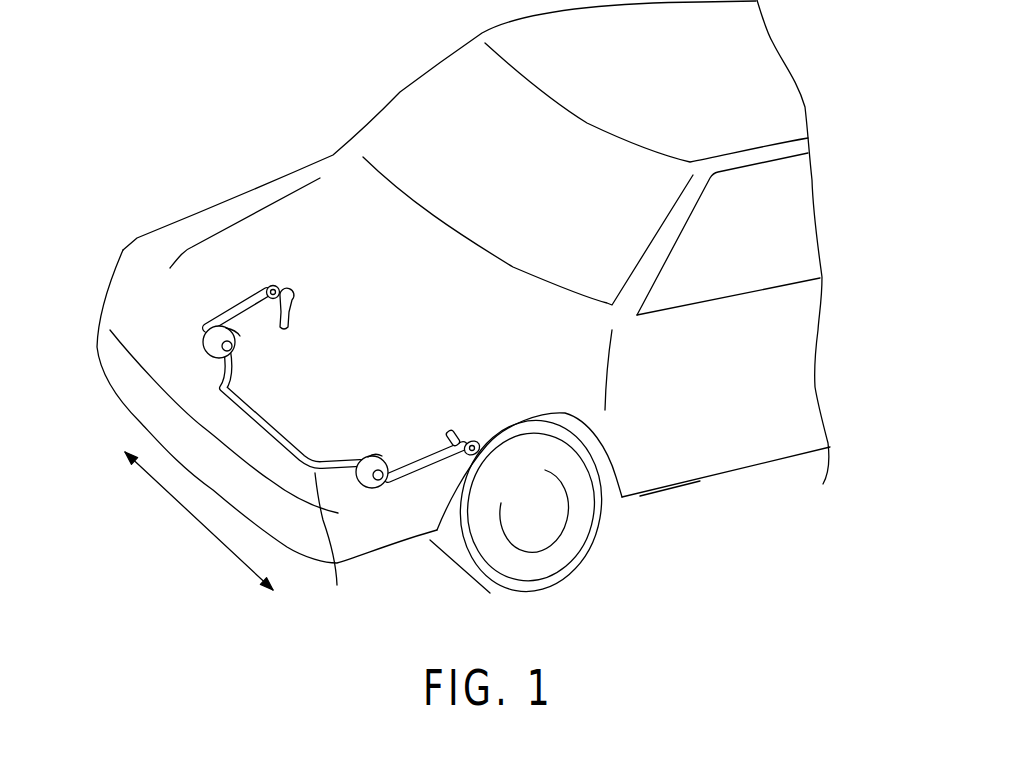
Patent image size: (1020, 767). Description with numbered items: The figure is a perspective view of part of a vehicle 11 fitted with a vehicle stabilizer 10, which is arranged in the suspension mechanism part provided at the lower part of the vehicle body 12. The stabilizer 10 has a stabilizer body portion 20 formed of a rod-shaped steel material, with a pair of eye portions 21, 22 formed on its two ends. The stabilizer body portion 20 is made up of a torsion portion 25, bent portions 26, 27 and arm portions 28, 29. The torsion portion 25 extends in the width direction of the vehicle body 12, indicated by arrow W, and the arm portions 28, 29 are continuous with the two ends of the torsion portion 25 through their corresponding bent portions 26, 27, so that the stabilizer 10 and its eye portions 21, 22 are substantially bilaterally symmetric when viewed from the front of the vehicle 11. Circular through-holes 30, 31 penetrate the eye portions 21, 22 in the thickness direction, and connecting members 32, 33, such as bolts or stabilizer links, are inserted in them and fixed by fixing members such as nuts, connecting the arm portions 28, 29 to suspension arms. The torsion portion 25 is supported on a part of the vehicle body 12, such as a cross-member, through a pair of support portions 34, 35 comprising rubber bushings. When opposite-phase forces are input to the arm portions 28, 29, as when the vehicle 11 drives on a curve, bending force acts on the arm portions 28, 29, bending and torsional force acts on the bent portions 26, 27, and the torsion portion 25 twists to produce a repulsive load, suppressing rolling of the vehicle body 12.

The vehicle stabilizer 10 is at (243, 423).
The vehicle 11 is at (235, 117).
The vehicle body 12 is at (643, 497).
The stabilizer body portion 20 is at (331, 546).
The eye portion 21 is at (286, 265).
The eye portion 22 is at (482, 397).
The torsion portion 25 is at (287, 430).
The bent portion 26 is at (203, 330).
The bent portion 27 is at (382, 488).
The arm portion 28 is at (227, 310).
The arm portion 29 is at (420, 458).
The through-hole 30 is at (279, 287).
The through-hole 31 is at (476, 445).
The connecting member 32 is at (290, 296).
The connecting member 33 is at (453, 427).
The support portion 34 is at (240, 330).
The support portion 35 is at (379, 454).
The width direction arrow W is at (197, 522).